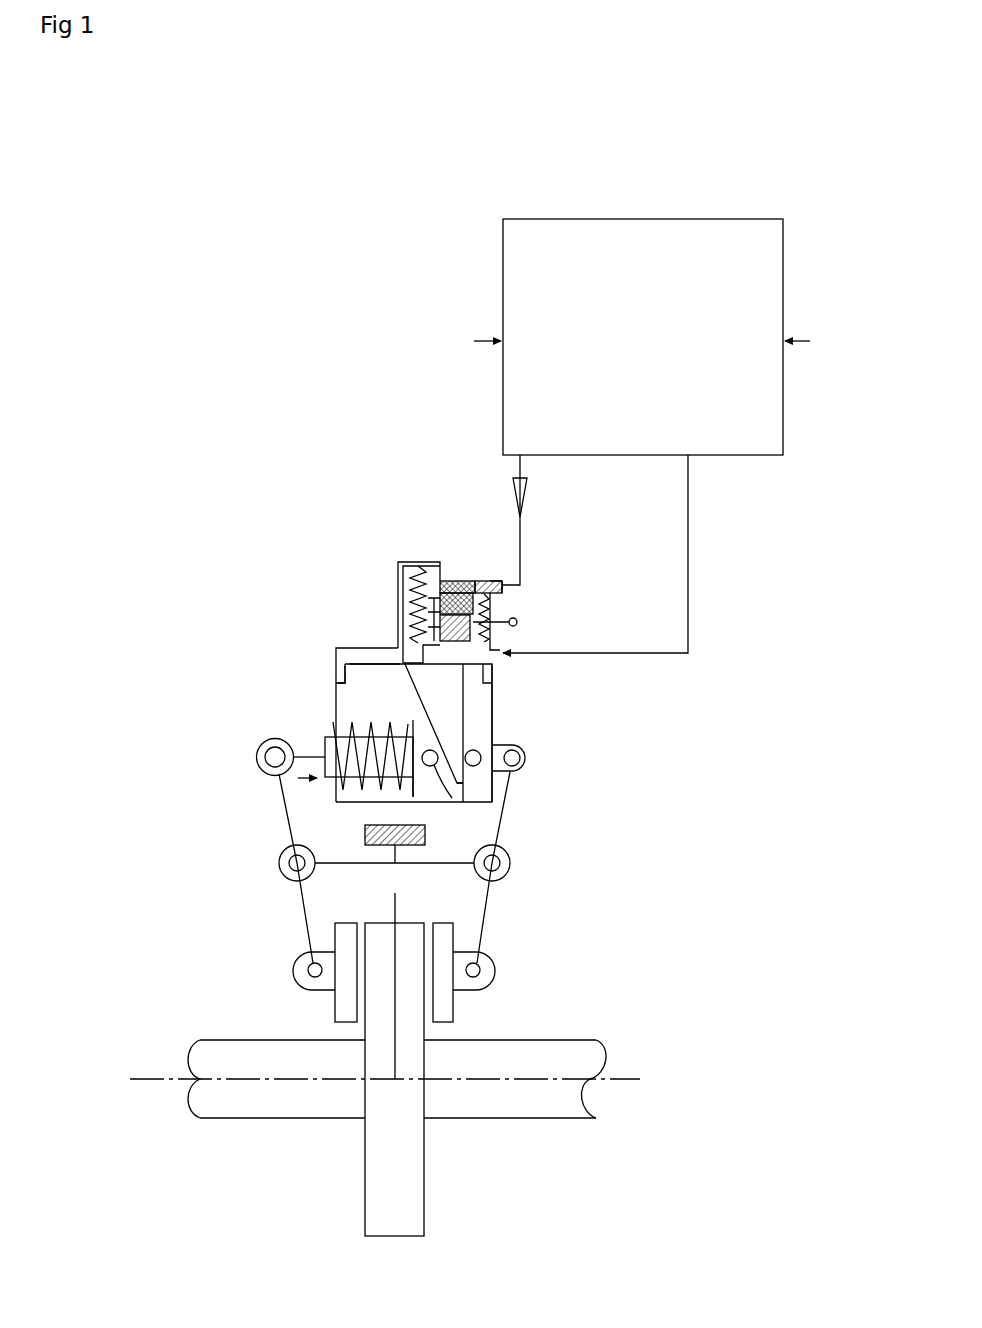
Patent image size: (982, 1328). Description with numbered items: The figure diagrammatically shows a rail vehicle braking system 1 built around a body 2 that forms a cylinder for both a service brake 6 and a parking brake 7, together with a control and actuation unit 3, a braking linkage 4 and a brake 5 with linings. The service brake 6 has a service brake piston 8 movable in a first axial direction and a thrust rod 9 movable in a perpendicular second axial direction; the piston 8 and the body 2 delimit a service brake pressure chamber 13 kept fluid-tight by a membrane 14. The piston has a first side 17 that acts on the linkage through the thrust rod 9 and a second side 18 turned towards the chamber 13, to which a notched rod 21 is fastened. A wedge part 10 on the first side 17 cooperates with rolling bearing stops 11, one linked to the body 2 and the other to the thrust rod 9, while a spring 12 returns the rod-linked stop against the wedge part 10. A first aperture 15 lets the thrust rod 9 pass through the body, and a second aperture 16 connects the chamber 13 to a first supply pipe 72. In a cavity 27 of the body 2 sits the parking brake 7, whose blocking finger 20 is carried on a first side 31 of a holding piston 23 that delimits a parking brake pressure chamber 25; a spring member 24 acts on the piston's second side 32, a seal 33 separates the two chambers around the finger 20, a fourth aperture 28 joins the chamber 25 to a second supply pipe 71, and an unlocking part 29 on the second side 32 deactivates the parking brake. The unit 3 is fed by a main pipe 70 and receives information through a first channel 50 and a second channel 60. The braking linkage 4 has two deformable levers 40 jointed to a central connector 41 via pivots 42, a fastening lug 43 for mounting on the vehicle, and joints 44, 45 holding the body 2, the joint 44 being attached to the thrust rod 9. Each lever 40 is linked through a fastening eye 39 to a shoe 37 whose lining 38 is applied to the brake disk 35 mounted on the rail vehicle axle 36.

The rail vehicle braking system 1 is at (266, 479).
The body 2 is at (493, 732).
The control and actuation unit 3 is at (412, 163).
The braking linkage 4 is at (206, 814).
The brake 5 is at (232, 966).
The service brake 6 is at (218, 702).
The parking brake 7 is at (493, 501).
The service brake piston 8 is at (375, 668).
The thrust rod 9 is at (326, 742).
The wedge part 10 is at (452, 700).
The rolling bearing stops 11 is at (473, 770).
The spring 12 is at (385, 777).
The service brake pressure chamber 13 is at (348, 648).
The membrane 14 is at (488, 676).
The first aperture 15 is at (298, 778).
The second aperture 16 is at (338, 670).
The first side 17 is at (340, 676).
The second side 18 is at (378, 664).
The blocking finger 20 is at (458, 580).
The notched rod 21 is at (410, 562).
The holding piston 23 is at (488, 655).
The spring member 24 is at (472, 632).
The parking brake pressure chamber 25 is at (470, 600).
The cavity 27 is at (482, 600).
The fourth aperture 28 is at (500, 583).
The unlocking part 29 is at (517, 622).
The first side 31 is at (456, 670).
The second side 32 is at (482, 587).
The seal 33 is at (424, 596).
The brake disk 35 is at (365, 1184).
The rail vehicle axle 36 is at (225, 1120).
The shoes 37 is at (258, 946).
The lining 38 is at (347, 930).
The fastening eye 39 is at (302, 980).
The deformable levers 40 is at (500, 815).
The central connector 41 is at (430, 866).
The pivots 42 is at (279, 863).
The fastening lug 43 is at (365, 835).
The joint 44 is at (257, 757).
The joint 45 is at (528, 758).
The first channel 50 is at (480, 341).
The second channel 60 is at (806, 341).
The main pipe 70 is at (643, 216).
The second supply pipe 71 is at (522, 540).
The first supply pipe 72 is at (689, 527).